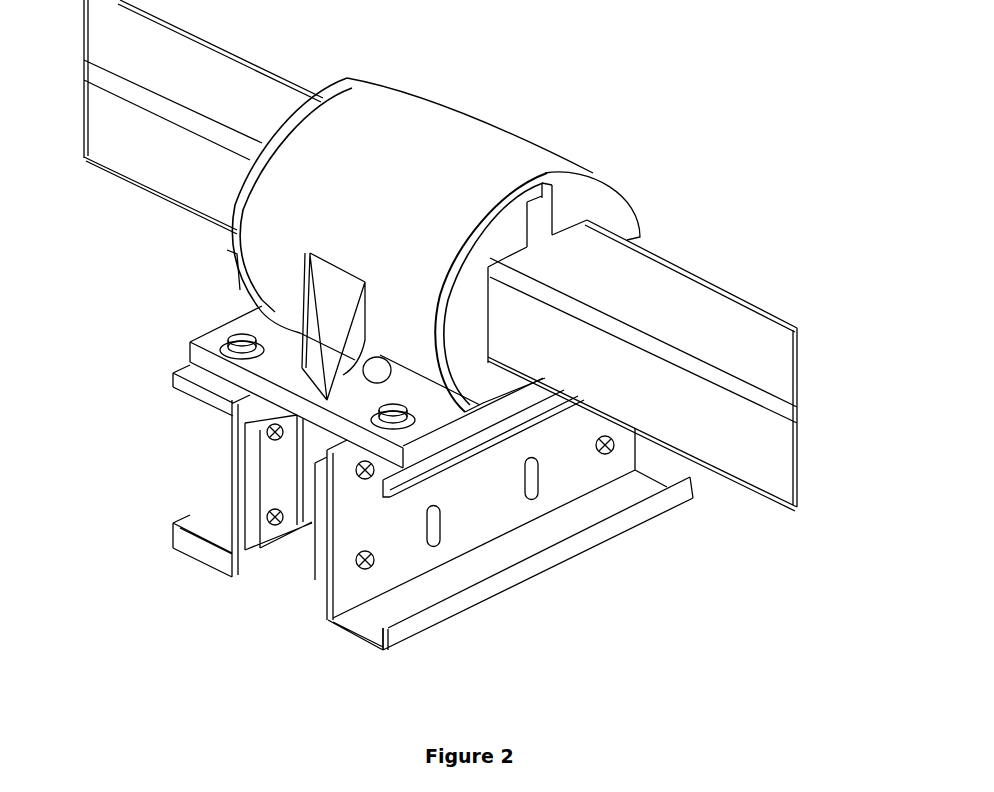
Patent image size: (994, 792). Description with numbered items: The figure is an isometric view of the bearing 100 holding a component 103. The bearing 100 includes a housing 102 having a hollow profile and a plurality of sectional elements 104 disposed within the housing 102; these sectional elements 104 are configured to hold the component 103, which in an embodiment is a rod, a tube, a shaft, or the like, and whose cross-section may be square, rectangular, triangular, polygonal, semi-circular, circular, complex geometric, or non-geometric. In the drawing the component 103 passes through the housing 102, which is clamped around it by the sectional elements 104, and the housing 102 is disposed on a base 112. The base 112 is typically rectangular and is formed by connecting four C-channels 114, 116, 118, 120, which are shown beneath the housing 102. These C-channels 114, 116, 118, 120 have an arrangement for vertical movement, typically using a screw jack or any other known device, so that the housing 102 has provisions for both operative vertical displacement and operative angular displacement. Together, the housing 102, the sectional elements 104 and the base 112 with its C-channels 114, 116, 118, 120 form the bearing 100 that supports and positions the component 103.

The bearing 100 is at (704, 97).
The housing 102 is at (489, 131).
The component 103 is at (198, 185).
The sectional elements 104 is at (606, 206).
The base 112 is at (554, 574).
The C-channel 114 is at (221, 393).
The C-channel 116 is at (249, 520).
The C-channel 118 is at (323, 557).
The C-channel 120 is at (356, 629).